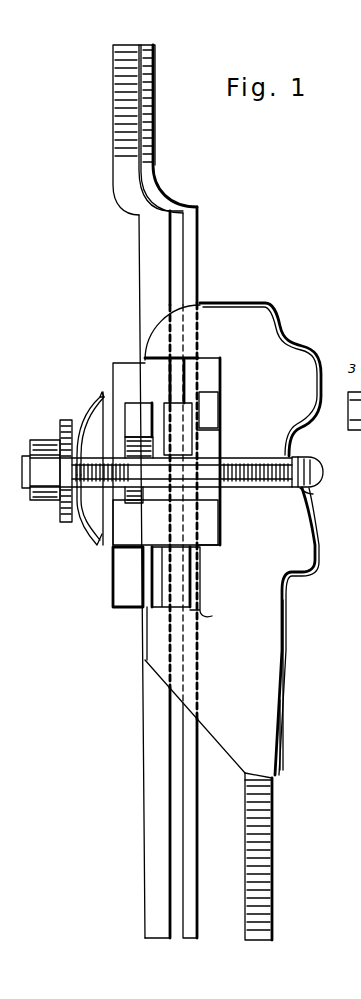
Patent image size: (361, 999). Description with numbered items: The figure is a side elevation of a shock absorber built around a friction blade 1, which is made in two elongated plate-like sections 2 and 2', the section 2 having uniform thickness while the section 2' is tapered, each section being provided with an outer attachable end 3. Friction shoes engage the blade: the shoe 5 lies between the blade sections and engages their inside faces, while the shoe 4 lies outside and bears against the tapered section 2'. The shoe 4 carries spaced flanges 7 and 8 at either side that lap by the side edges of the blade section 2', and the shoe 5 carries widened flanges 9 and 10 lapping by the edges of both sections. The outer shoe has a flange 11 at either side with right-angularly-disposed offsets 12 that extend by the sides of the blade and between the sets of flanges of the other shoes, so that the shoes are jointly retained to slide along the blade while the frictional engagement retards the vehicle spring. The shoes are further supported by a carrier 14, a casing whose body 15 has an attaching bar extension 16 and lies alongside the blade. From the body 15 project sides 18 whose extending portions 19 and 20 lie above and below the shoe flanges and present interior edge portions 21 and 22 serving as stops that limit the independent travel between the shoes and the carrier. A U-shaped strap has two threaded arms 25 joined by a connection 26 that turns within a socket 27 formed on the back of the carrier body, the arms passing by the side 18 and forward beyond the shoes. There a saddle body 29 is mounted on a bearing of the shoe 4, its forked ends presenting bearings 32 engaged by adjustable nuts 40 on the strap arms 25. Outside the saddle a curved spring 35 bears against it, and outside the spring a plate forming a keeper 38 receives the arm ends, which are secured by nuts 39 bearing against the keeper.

The outer attachable end 3 is at (155, 119).
The friction blade 1 is at (194, 256).
The blade section 2 is at (179, 606).
The blade section 2' is at (129, 576).
The extending portion 19 is at (152, 341).
The friction shoe 4 is at (112, 363).
The flange 7 is at (101, 393).
The saddle body 29 is at (99, 420).
The flange 9 is at (169, 408).
The friction shoe 5 is at (177, 386).
The interior edge portion 21 is at (214, 393).
The flange 11 is at (213, 428).
The threaded arm 25 is at (161, 491).
The connection 26 is at (319, 482).
The socket 27 is at (312, 493).
The nut 40 is at (143, 492).
The nut 39 is at (56, 494).
The keeper 38 is at (66, 521).
The curved spring 35 is at (90, 531).
The bearing 32 is at (100, 554).
The offset 12 is at (115, 548).
The flange 10 is at (190, 599).
The interior edge portion 22 is at (213, 546).
The flange 8 is at (123, 602).
The extending portion 20 is at (160, 648).
The carrier 14 is at (260, 539).
The carrier body 15 is at (281, 668).
The carrier side 18 is at (251, 732).
The attaching bar extension 16 is at (273, 876).